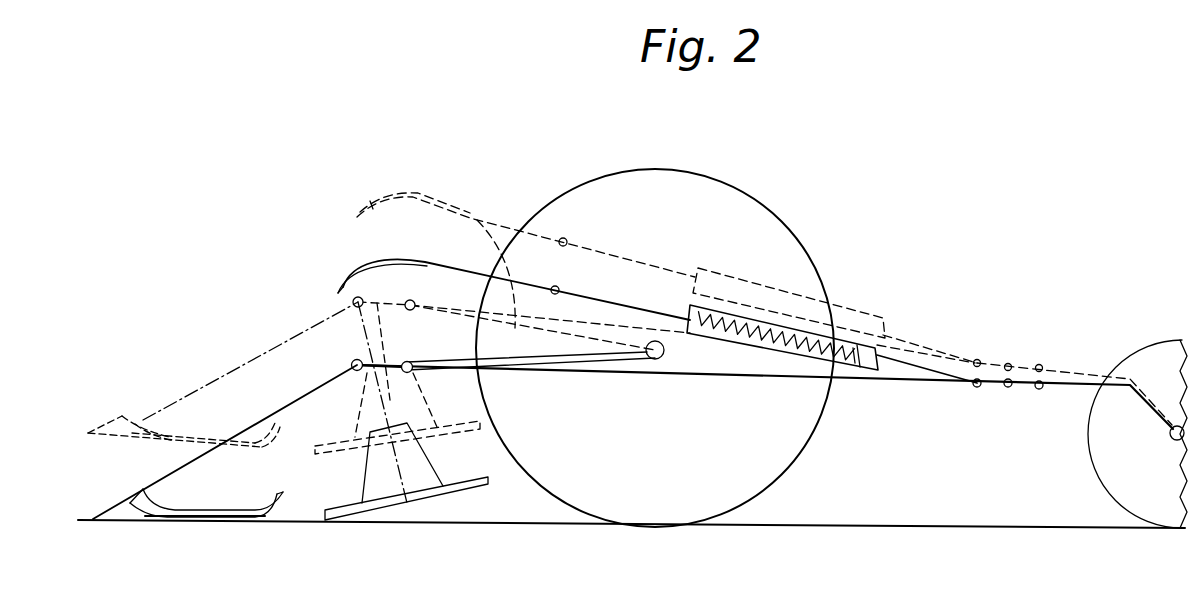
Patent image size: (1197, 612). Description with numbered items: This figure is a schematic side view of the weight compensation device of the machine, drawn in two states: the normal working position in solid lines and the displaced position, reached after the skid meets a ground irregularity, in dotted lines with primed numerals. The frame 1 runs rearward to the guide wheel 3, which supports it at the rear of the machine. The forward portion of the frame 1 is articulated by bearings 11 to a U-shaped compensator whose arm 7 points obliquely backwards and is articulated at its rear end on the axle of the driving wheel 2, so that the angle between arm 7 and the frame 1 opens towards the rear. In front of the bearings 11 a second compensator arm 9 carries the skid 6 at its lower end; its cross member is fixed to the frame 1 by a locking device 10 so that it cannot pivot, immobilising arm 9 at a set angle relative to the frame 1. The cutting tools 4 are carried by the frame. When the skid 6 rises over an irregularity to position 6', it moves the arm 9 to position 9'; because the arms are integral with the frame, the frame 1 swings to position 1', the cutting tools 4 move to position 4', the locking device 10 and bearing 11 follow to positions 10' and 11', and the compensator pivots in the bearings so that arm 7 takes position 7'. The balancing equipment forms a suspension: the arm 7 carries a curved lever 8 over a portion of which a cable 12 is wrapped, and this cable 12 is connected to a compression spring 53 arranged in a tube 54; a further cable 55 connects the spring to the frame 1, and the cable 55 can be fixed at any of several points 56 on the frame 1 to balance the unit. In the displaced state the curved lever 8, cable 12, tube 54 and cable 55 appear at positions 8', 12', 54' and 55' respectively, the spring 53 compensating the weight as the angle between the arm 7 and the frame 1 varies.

The frame 1 is at (765, 405).
The frame position 1' is at (1074, 354).
The driving wheel 2 is at (797, 466).
The guide wheel 3 is at (1088, 477).
The cutting tools 4 is at (406, 434).
The cutting tools position 4' is at (396, 378).
The skid 6 is at (207, 525).
The skid position 6' is at (184, 447).
The arm 7 is at (531, 389).
The arm position 7' is at (550, 365).
The curved lever 8 is at (514, 275).
The curved lever position 8' is at (526, 211).
The arm 9 is at (225, 442).
The arm position 9' is at (250, 361).
The locking device 10 is at (356, 363).
The locking device position 10' is at (343, 296).
The bearing 11 is at (427, 349).
The bearing position 11' is at (429, 289).
The cable 12 is at (549, 269).
The cable position 12' is at (522, 236).
The compression spring 53 is at (780, 347).
The tube 54 is at (784, 365).
The tube position 54' is at (789, 285).
The cable 55 is at (927, 390).
The cable position 55' is at (933, 323).
The fixing points 56 is at (1037, 389).